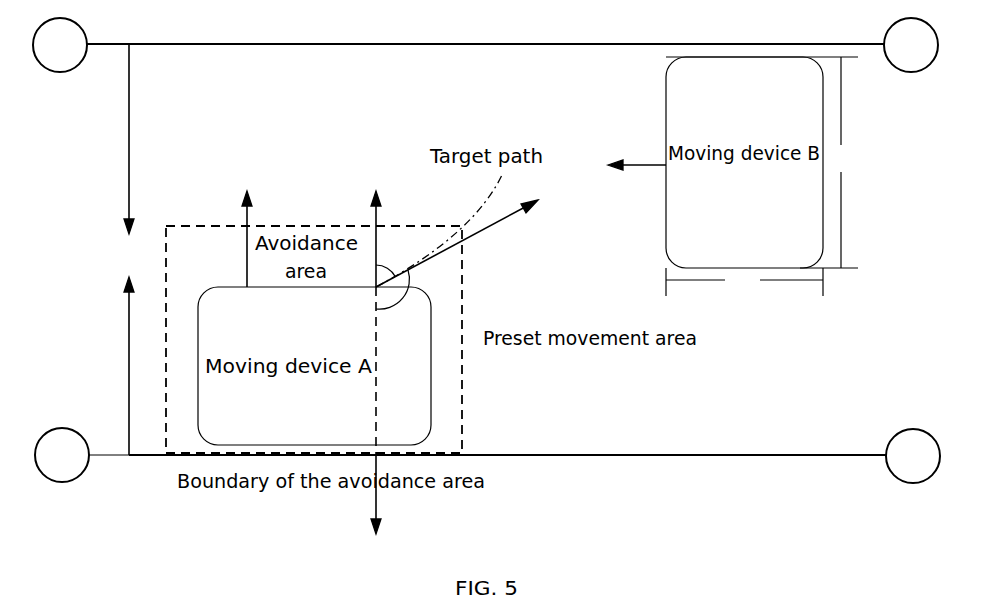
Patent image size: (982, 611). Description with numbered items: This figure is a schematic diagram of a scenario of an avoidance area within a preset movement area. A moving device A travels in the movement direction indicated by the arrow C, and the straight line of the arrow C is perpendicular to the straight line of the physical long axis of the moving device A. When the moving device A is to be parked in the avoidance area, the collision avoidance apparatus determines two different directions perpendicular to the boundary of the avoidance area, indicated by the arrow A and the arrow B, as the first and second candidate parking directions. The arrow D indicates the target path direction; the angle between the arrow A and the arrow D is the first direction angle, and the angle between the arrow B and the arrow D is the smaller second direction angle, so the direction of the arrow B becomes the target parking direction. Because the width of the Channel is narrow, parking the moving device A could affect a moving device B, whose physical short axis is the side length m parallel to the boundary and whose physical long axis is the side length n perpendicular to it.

The arrow A is at (360, 410).
The arrow B is at (389, 238).
The arrow C is at (237, 238).
The arrow D is at (459, 243).
The side length n is at (762, 162).
The side length m is at (744, 281).
The channel Channel is at (121, 249).